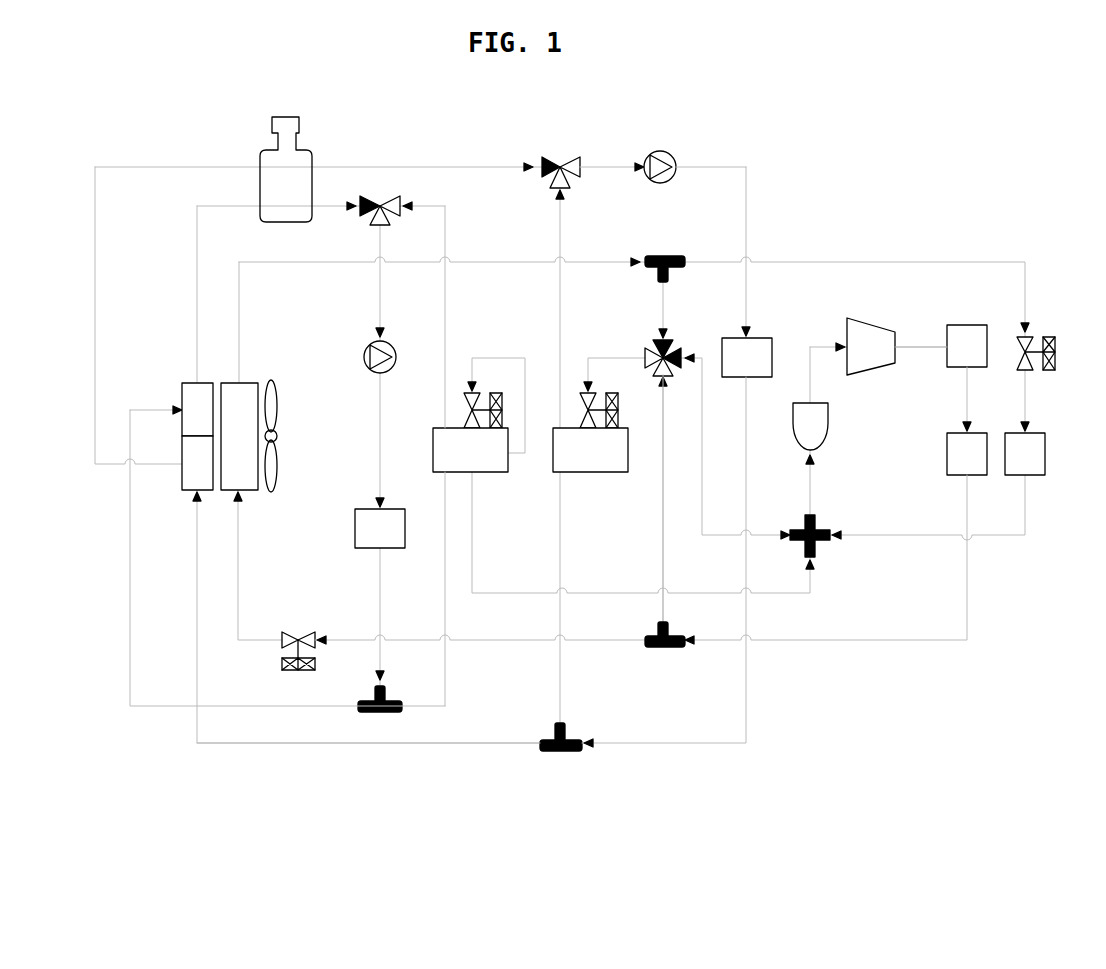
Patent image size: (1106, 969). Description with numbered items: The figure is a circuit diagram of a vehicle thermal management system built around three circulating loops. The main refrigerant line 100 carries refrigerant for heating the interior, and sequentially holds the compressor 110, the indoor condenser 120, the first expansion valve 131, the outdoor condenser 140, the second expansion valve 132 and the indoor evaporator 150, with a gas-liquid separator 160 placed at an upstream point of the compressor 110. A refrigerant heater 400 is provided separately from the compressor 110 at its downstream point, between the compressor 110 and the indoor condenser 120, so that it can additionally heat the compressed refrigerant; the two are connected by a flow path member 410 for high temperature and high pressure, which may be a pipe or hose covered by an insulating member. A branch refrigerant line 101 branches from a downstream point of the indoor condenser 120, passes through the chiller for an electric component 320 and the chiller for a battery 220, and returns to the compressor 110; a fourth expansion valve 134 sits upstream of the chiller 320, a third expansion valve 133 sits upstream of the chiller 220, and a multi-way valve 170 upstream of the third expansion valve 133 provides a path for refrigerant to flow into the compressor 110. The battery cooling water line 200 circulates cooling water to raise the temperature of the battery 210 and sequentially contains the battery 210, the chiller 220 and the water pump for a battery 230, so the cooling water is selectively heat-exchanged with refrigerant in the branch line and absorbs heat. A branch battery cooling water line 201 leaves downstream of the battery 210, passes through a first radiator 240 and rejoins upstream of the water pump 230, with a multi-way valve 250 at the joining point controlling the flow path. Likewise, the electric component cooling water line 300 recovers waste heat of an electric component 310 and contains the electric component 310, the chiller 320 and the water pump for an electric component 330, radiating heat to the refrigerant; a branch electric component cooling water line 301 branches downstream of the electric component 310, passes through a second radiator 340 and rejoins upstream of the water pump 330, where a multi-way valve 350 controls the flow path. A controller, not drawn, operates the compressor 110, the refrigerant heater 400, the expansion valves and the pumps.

The main refrigerant line 100 is at (607, 641).
The branch refrigerant line 101 is at (663, 558).
The compressor 110 is at (870, 320).
The indoor condenser 120 is at (950, 475).
The first expansion valve 131 is at (300, 632).
The second expansion valve 132 is at (1029, 336).
The third expansion valve 133 is at (611, 393).
The fourth expansion valve 134 is at (497, 393).
The outdoor condenser 140 is at (250, 383).
The indoor evaporator 150 is at (1030, 433).
The gas-liquid separator 160 is at (825, 440).
The multi-way valve 170 is at (678, 345).
The battery cooling water line 200 is at (747, 693).
The branch battery cooling water line 201 is at (505, 743).
The battery 210 is at (770, 338).
The chiller for a battery 220 is at (614, 472).
The water pump for a battery 230 is at (668, 151).
The first radiator 240 is at (187, 490).
The multi-way valve 250 is at (571, 160).
The electric component cooling water line 300 is at (445, 680).
The branch electric component cooling water line 301 is at (227, 706).
The electric component 310 is at (355, 509).
The chiller for an electric component 320 is at (495, 472).
The water pump for an electric component 330 is at (365, 350).
The second radiator 340 is at (190, 383).
The multi-way valve 350 is at (390, 200).
The refrigerant heater 400 is at (967, 325).
The flow path member 410 is at (967, 385).